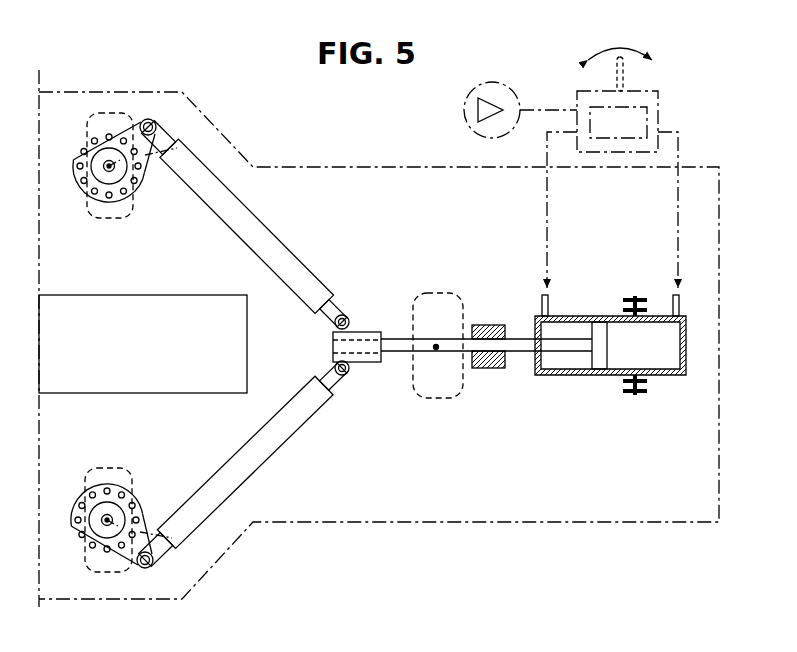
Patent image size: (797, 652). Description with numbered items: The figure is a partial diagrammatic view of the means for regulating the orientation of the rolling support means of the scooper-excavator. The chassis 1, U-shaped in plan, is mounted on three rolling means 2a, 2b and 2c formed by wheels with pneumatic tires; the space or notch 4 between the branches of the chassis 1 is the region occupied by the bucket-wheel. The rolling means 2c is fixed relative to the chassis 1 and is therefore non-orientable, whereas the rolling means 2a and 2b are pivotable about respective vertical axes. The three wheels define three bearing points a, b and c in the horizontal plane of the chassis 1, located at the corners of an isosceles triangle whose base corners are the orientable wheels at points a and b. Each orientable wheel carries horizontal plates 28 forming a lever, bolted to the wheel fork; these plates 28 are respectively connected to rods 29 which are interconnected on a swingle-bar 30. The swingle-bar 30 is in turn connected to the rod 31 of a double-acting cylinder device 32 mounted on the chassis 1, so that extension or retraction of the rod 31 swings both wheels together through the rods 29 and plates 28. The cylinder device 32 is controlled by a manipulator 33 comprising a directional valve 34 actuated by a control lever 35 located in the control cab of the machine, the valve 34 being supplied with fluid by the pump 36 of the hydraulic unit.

The chassis 1 is at (373, 165).
The notch 4 is at (130, 380).
The rolling means 2a is at (127, 215).
The rolling means 2b is at (130, 472).
The rolling means 2c is at (437, 400).
The horizontal plates 28 is at (140, 175).
The rods 29 is at (272, 249).
The swingle-bar 30 is at (366, 362).
The rod 31 is at (520, 346).
The double-acting cylinder device 32 is at (580, 316).
The manipulator 33 is at (657, 120).
The directional valve 34 is at (634, 105).
The control lever 35 is at (620, 53).
The pump 36 is at (492, 82).
The bearing point a is at (109, 166).
The bearing point b is at (107, 520).
The bearing point c is at (436, 347).